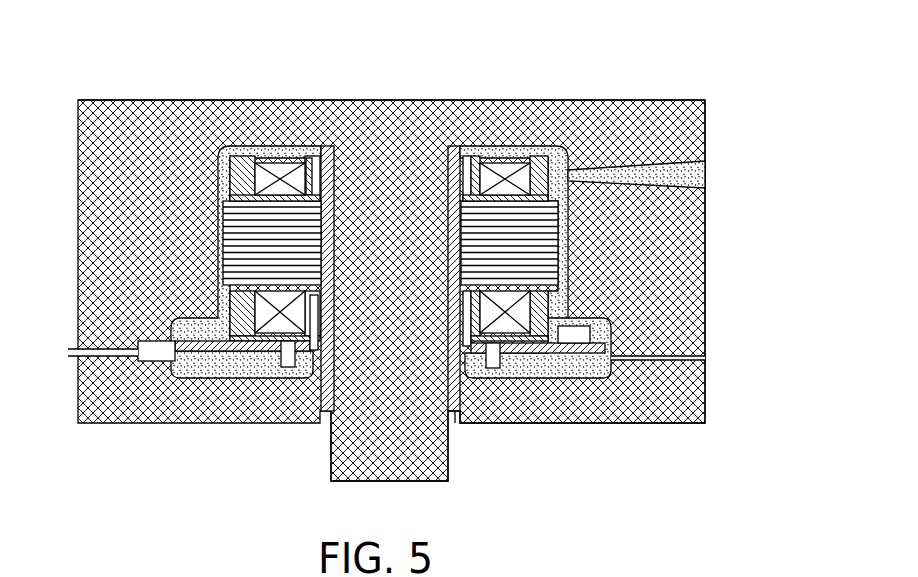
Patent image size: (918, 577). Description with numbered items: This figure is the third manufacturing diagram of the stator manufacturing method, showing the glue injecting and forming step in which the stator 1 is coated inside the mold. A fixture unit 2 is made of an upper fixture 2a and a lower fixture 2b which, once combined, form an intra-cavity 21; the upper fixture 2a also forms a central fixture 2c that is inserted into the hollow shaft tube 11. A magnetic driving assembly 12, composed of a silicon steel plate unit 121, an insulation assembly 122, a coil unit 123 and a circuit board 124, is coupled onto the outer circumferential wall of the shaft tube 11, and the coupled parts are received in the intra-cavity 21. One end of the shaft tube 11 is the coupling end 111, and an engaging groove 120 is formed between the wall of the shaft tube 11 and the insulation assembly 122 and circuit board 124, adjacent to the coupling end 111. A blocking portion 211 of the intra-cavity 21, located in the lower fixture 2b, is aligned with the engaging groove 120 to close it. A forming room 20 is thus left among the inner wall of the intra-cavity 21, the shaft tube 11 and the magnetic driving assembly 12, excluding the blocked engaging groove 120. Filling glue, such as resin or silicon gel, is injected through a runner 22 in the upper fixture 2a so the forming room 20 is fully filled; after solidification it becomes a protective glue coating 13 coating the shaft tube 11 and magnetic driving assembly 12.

The motor 1 is at (425, 279).
The fixture unit 2 is at (157, 75).
The upper fixture 2a is at (222, 93).
The lower fixture 2b is at (615, 410).
The central fixture 2c is at (330, 445).
The shaft tube 11 is at (427, 147).
The coupling end 111 is at (447, 415).
The magnetic driving assembly 12 is at (643, 287).
The engaging groove 120 is at (480, 373).
The silicon steel plate unit 121 is at (640, 176).
The insulation assembly 122 is at (542, 290).
The coil unit 123 is at (500, 158).
The circuit board 124 is at (557, 337).
The protective glue coating 13 is at (282, 146).
The forming room 20 is at (210, 158).
The intra-cavity 21 is at (215, 212).
The blocking portion 211 is at (462, 355).
The runner 22 is at (635, 158).